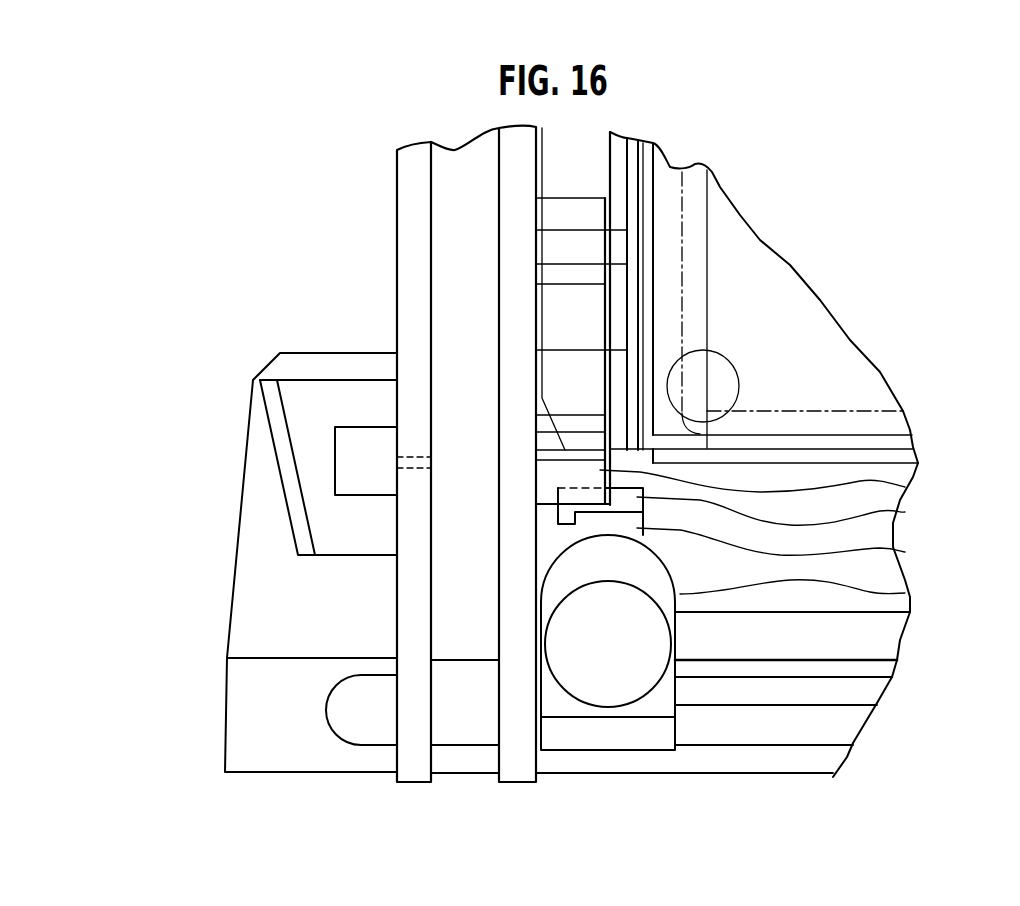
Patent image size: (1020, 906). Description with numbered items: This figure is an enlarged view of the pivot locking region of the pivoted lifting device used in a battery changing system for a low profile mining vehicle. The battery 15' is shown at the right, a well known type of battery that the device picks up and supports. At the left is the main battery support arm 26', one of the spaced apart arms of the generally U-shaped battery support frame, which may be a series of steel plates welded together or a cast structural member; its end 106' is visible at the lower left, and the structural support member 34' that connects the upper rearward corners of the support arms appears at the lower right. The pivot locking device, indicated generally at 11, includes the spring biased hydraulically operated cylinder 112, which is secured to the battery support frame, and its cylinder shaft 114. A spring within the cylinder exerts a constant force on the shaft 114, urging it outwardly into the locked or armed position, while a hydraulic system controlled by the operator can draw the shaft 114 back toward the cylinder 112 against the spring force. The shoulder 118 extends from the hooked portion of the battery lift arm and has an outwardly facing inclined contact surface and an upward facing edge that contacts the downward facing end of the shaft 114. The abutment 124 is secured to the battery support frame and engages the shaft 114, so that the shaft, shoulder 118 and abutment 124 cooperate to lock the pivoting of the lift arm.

The main battery support arm 26' is at (424, 453).
The battery 15' is at (764, 454).
The end of support arm 106' is at (305, 562).
The shoulder 118 is at (905, 487).
The abutment 124 is at (905, 512).
The cylinder shaft 114 is at (905, 552).
The spring biased hydraulically operated cylinder 112 is at (905, 593).
The layered assembly 11 is at (956, 532).
The structural support member 34' is at (694, 692).